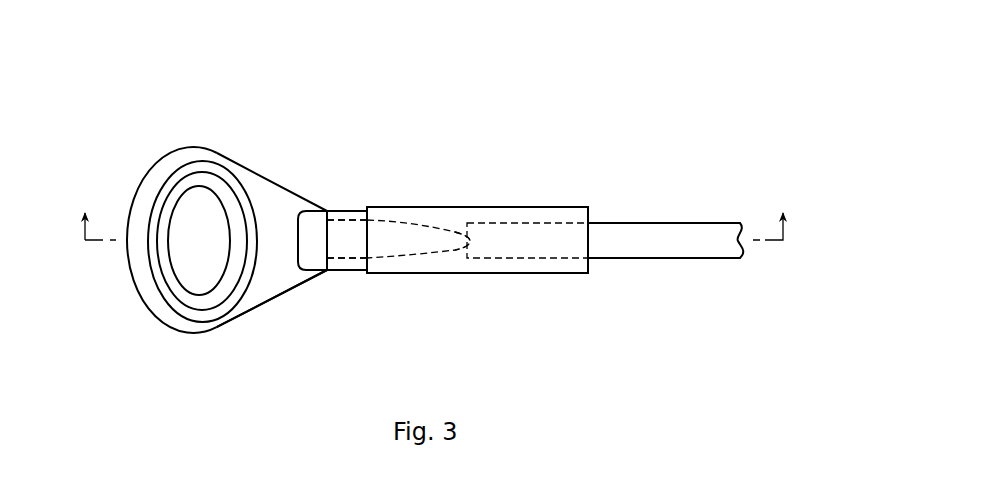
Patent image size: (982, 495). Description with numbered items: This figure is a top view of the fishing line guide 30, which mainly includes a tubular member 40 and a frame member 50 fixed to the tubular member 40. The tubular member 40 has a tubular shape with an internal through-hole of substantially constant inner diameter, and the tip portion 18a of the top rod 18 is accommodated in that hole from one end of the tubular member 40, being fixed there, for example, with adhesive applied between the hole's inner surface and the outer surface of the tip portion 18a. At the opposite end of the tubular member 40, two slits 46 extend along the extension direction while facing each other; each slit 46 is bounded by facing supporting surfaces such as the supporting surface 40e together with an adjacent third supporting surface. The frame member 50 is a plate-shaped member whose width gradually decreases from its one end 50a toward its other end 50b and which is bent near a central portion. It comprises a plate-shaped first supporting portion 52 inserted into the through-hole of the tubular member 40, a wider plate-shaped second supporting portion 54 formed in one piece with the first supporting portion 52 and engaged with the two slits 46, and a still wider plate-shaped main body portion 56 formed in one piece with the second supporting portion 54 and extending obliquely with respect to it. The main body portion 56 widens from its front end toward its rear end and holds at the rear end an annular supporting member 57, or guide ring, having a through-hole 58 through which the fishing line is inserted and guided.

The fishing line guide 30 is at (634, 105).
The frame member 50 is at (217, 223).
The one end of the frame member 50a is at (145, 192).
The other end of the frame member 50b is at (453, 236).
The main body portion 56 is at (267, 282).
The annular supporting member 57 is at (238, 197).
The through-hole 58 is at (198, 213).
The tubular member 40 is at (443, 245).
The supporting surface 40e is at (352, 210).
The slit 46 is at (364, 210).
The first supporting portion 52 is at (400, 243).
The second supporting portion 54 is at (353, 238).
The top rod 18 is at (657, 244).
The tip portion 18a is at (533, 245).